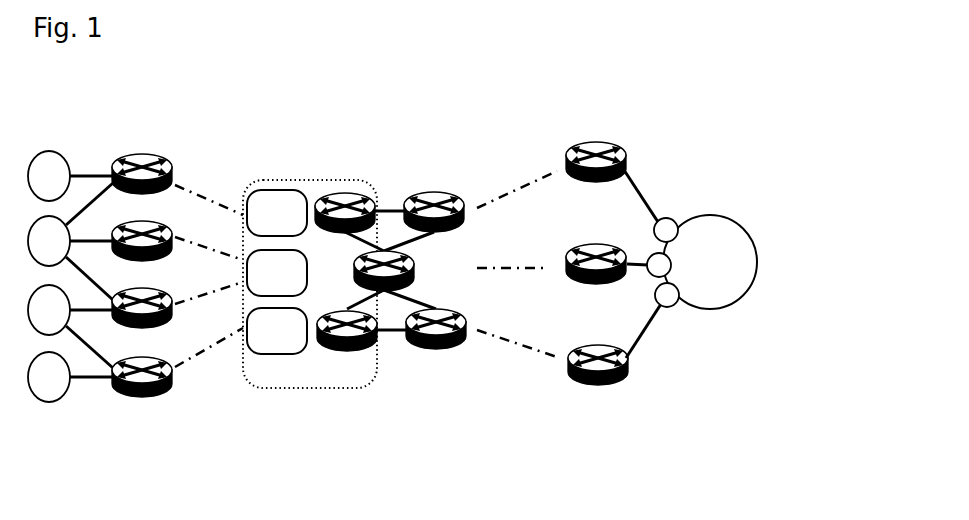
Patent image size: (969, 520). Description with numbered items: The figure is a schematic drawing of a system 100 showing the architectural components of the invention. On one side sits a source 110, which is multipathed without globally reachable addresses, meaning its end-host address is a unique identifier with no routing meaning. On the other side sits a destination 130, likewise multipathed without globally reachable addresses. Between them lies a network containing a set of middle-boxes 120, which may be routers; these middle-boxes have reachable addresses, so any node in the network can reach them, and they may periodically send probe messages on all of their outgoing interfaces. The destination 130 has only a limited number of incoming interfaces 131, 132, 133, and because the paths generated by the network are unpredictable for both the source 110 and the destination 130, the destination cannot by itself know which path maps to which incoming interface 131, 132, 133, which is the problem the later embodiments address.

The system 100 is at (78, 97).
The source 110 is at (60, 328).
The middle-boxes 120 is at (354, 279).
The destination 130 is at (663, 275).
The incoming interface 131 is at (684, 334).
The incoming interface 132 is at (633, 286).
The incoming interface 133 is at (638, 219).